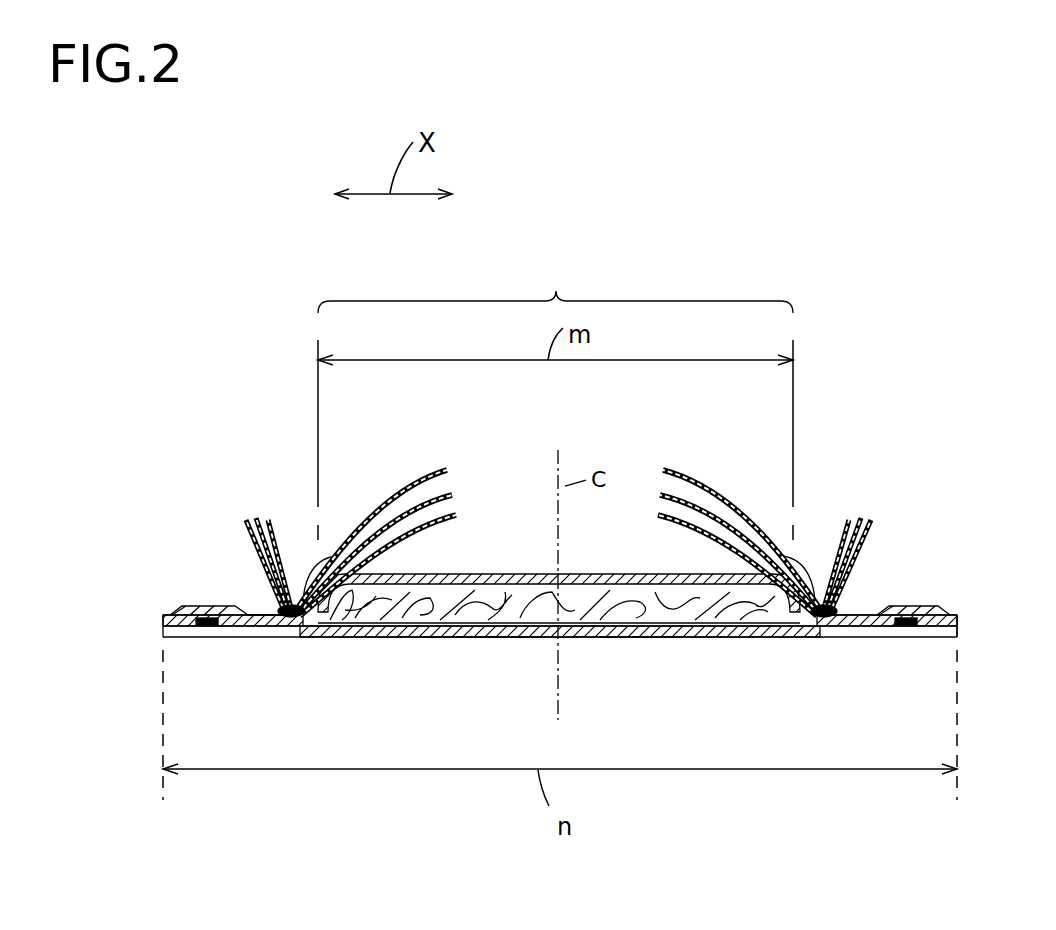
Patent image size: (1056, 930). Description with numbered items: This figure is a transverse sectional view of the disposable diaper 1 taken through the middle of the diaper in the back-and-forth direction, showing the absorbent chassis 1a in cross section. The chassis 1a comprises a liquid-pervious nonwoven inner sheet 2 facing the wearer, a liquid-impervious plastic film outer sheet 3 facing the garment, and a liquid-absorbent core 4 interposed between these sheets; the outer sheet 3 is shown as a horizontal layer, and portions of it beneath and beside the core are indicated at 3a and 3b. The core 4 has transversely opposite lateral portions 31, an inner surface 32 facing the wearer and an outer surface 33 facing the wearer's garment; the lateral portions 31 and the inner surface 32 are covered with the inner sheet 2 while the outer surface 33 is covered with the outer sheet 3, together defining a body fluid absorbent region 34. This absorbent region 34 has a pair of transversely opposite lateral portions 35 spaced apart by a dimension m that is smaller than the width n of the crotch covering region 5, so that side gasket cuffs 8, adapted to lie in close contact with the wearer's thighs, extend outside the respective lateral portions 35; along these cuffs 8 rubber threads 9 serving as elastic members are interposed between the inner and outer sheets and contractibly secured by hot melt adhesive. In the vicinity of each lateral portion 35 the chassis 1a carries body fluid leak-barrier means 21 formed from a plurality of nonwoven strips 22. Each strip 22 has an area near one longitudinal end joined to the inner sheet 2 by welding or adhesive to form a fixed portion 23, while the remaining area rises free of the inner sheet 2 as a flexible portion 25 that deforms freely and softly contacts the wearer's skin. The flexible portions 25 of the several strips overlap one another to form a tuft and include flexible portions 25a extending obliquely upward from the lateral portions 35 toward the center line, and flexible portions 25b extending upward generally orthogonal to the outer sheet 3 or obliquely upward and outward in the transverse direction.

The disposable diaper 1 is at (702, 221).
The absorbent chassis 1a is at (685, 642).
The inner sheet 2 is at (250, 612).
The outer sheet 3 is at (243, 638).
The topsheet portion 3a is at (448, 638).
The topsheet portion 3b is at (509, 638).
The liquid-absorbent core 4 is at (408, 638).
The crotch covering region 5 is at (947, 638).
The side gasket cuff 8 is at (183, 638).
The rubber thread 9 is at (200, 626).
The body fluid leak-barrier means 21 is at (251, 468).
The strip 22 is at (350, 526).
The fixed portion 23 is at (268, 638).
The flexible portion 25 is at (682, 504).
The flexible portion extending toward center line 25a is at (446, 520).
The flexible portion extending upward or outward 25b is at (262, 532).
The lateral portion of core 31 is at (333, 638).
The inner surface of core 32 is at (520, 575).
The outer surface of core 33 is at (637, 638).
The body fluid absorbent region 34 is at (555, 287).
The lateral portion of body fluid absorbent region 35 is at (332, 556).